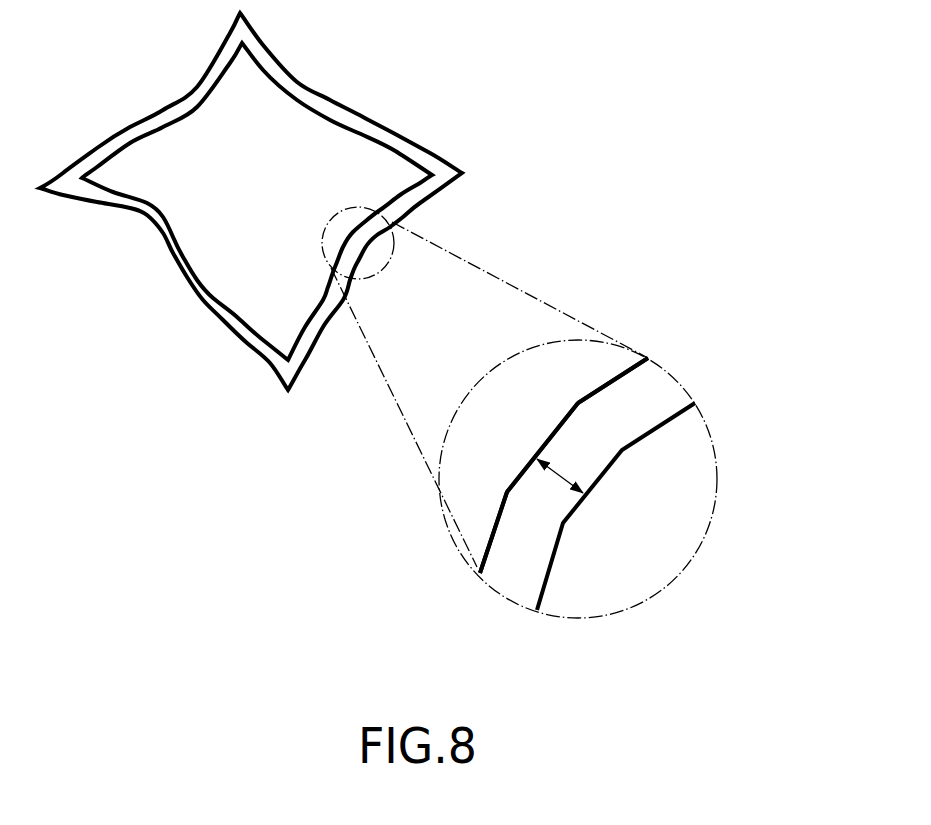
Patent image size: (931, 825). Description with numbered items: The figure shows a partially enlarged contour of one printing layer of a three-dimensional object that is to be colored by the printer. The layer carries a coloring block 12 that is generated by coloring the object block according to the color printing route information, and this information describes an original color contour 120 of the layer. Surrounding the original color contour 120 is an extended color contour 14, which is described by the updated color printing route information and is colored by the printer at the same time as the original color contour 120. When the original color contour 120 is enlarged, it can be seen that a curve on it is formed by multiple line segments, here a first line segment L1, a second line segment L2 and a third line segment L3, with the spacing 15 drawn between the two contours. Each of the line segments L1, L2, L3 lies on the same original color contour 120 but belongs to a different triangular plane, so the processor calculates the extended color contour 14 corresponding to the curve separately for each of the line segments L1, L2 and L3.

The coloring block 12 is at (287, 97).
The extended color contour 14 is at (350, 115).
The original color contour 120 is at (513, 475).
The gap between layers 15 is at (560, 477).
The first line segment L1 is at (600, 385).
The second line segment L2 is at (550, 433).
The third line segment L3 is at (492, 533).